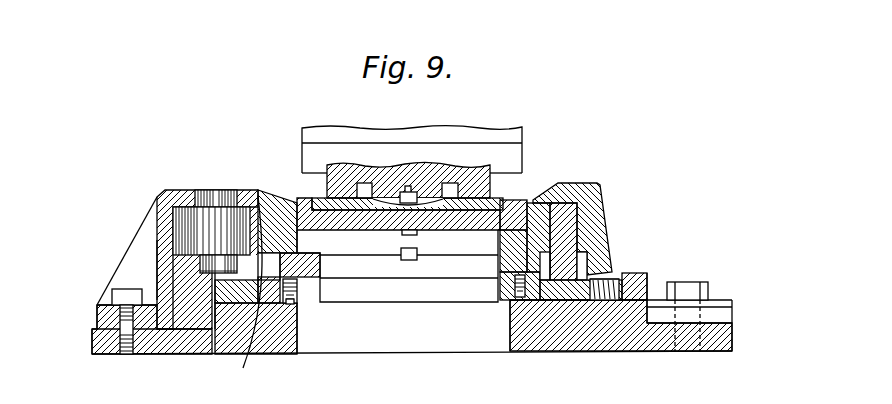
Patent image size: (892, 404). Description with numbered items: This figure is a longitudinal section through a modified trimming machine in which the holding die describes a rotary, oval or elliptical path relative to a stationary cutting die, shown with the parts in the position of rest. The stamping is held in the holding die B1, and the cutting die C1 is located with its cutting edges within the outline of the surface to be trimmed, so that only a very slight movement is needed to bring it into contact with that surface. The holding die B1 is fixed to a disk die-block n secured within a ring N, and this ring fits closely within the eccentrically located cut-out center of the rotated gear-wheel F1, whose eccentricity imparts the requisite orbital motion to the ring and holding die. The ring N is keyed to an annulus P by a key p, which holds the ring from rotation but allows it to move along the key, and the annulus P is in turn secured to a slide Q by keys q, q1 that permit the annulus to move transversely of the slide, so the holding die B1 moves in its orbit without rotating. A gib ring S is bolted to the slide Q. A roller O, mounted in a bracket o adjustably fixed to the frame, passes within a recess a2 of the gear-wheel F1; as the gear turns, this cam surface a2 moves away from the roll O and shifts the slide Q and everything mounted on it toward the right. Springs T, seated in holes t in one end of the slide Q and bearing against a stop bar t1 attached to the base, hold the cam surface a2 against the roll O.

The gear-wheel F1 is at (262, 192).
The ring N is at (280, 205).
The roller O is at (190, 228).
The bracket o is at (157, 268).
The recess or cam surface a2 is at (247, 291).
The cutting die C1 is at (477, 171).
The holding die B1 is at (497, 198).
The gib ring S is at (568, 184).
The spring T is at (611, 274).
The stop bar t1 is at (643, 273).
The hole t is at (592, 308).
The key q1 is at (303, 303).
The key q is at (510, 315).
The slide Q is at (447, 290).
The annulus P is at (397, 266).
The key p is at (412, 262).
The disk die-block n is at (430, 231).